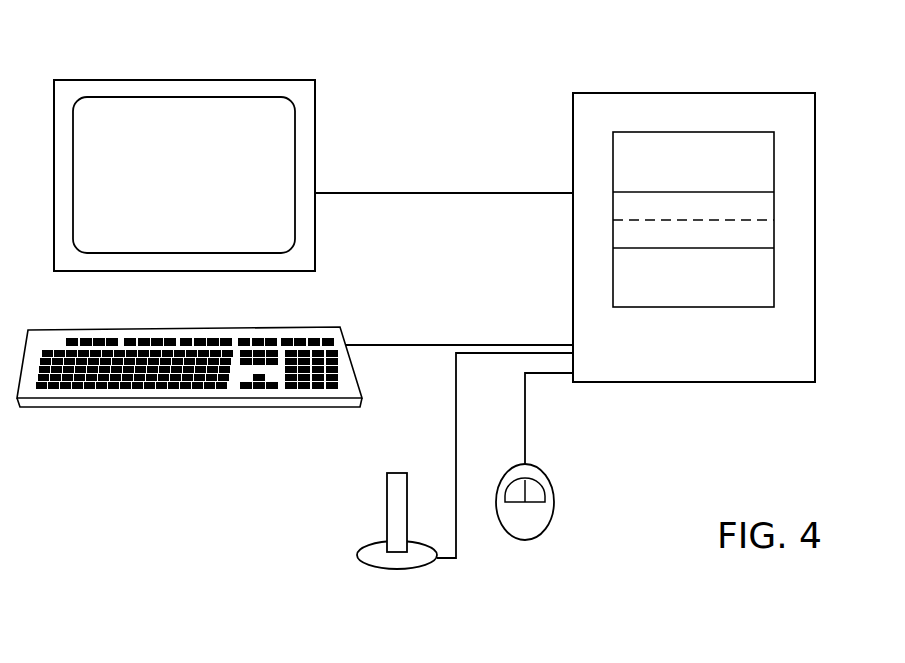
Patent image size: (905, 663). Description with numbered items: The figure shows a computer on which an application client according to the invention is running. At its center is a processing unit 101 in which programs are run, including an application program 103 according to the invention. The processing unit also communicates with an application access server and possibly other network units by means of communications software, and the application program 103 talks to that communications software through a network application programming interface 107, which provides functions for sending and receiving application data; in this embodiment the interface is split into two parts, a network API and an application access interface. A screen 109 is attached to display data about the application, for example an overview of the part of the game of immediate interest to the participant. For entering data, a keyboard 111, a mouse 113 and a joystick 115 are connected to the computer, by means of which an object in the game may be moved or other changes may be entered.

The processing unit 101 is at (768, 382).
The application program 103 is at (631, 132).
The network application programming interface 107 is at (774, 219).
The screen 109 is at (262, 80).
The keyboard 111 is at (212, 407).
The mouse 113 is at (549, 479).
The joystick 115 is at (386, 569).